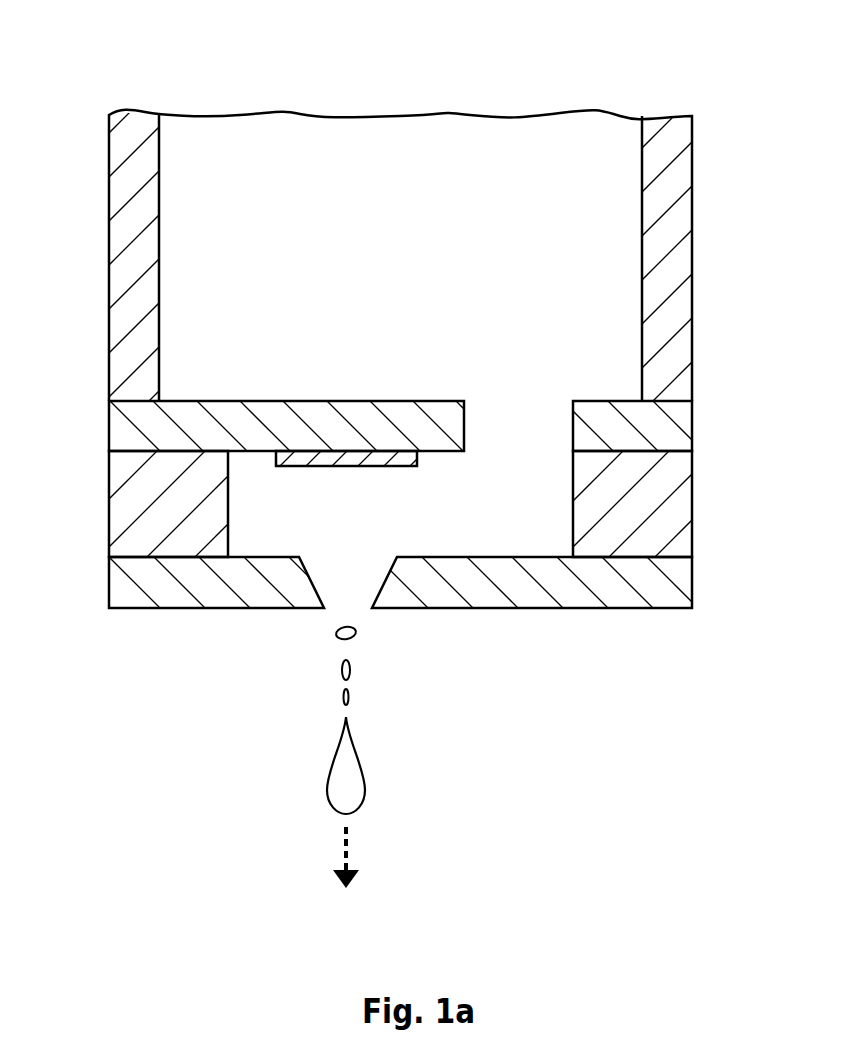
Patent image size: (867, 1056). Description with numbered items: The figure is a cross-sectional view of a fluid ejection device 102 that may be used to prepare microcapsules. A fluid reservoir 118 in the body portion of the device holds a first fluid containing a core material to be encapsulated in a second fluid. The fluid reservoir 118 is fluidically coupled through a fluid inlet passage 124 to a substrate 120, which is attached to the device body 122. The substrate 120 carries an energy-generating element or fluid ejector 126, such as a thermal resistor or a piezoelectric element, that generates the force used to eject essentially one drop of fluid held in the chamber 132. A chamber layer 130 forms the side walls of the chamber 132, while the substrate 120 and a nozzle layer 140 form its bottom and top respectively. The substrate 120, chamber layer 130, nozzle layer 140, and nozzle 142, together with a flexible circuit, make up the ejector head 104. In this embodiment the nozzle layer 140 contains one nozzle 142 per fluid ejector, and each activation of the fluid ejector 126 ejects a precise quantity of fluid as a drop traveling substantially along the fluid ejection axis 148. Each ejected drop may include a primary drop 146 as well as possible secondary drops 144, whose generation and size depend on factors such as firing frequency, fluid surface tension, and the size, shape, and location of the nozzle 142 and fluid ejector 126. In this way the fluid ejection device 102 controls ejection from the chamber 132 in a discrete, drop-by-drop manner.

The fluid ejection device 102 is at (718, 72).
The ejector head 104 is at (770, 639).
The fluid reservoir 118 is at (423, 246).
The substrate 120 is at (682, 415).
The device body 122 is at (681, 262).
The fluid inlet passage 124 is at (523, 421).
The fluid ejector 126 is at (418, 462).
The chamber layer 130 is at (682, 500).
The chamber 132 is at (477, 528).
The nozzle layer 140 is at (622, 595).
The nozzle 142 is at (338, 610).
The secondary drops 144 is at (375, 627).
The primary drop 146 is at (355, 791).
The fluid ejection axis 148 is at (348, 855).